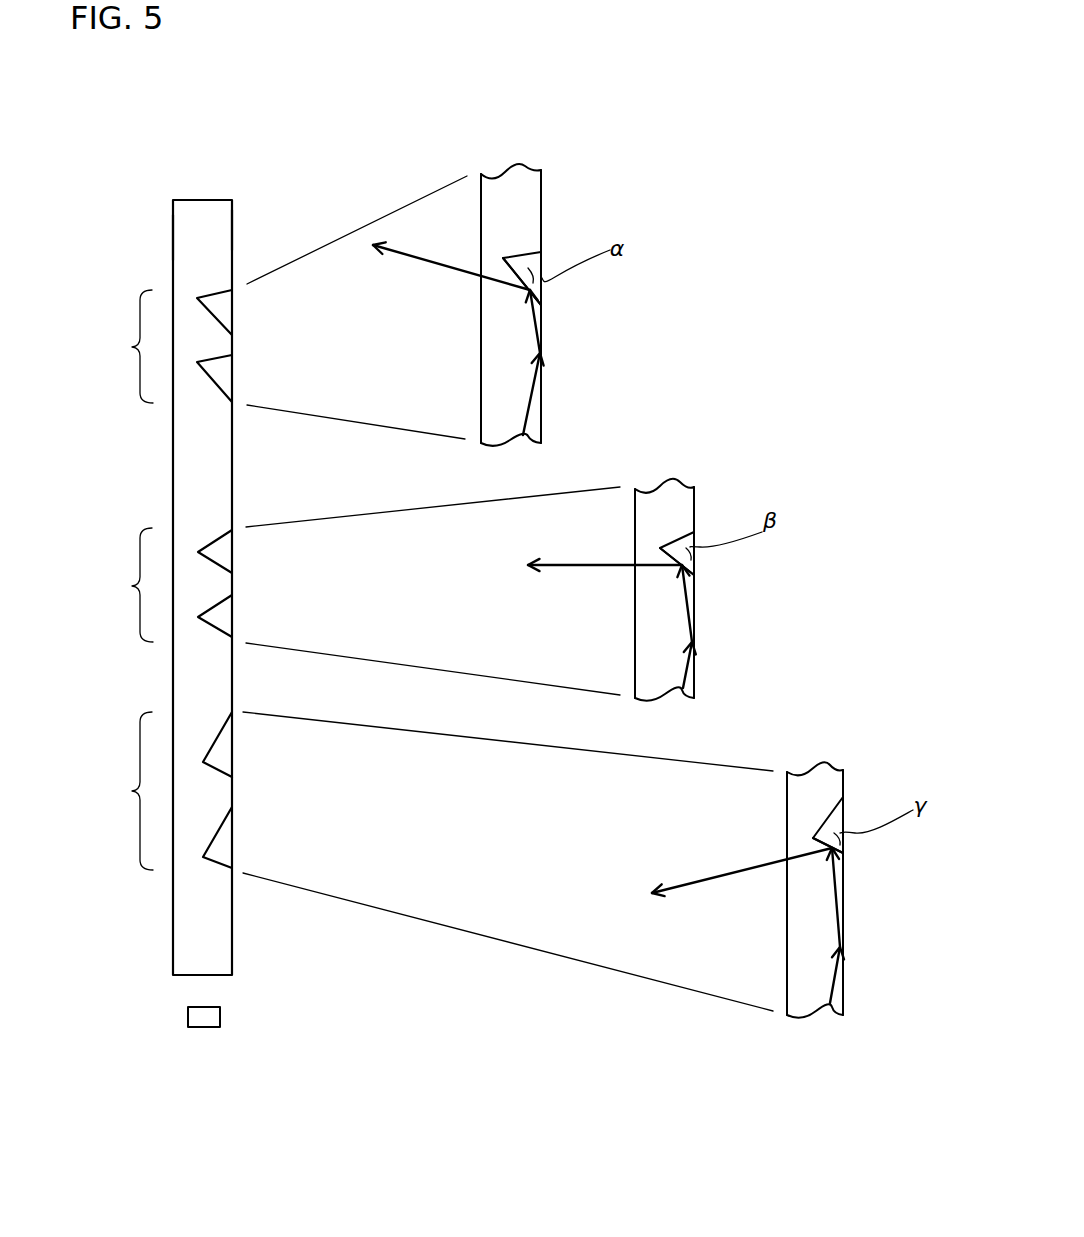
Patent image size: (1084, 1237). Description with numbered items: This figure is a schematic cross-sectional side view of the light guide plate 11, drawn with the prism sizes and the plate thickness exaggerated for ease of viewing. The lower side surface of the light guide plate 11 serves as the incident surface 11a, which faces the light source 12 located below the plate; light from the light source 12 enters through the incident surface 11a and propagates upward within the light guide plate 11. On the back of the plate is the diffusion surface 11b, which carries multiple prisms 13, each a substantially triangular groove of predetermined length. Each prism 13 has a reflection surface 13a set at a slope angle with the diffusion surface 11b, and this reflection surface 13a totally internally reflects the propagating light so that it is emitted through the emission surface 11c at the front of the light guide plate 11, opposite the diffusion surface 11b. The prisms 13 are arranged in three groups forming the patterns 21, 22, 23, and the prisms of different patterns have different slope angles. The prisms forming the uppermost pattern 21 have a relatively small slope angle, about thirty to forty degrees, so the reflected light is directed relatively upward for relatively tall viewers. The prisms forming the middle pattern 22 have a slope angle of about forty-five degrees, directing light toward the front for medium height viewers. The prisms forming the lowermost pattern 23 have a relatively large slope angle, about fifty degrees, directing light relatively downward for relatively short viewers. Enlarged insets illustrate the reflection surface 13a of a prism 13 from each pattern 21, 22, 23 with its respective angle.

The light guide plate 11 is at (203, 217).
The incident surface 11a is at (195, 977).
The diffusion surface 11b is at (233, 228).
The emission surface 11c is at (173, 237).
The light source 12 is at (212, 1015).
The prism 13 is at (223, 373).
The reflection surface 13a is at (500, 266).
The pattern 21 is at (126, 346).
The pattern 22 is at (126, 585).
The pattern 23 is at (126, 791).